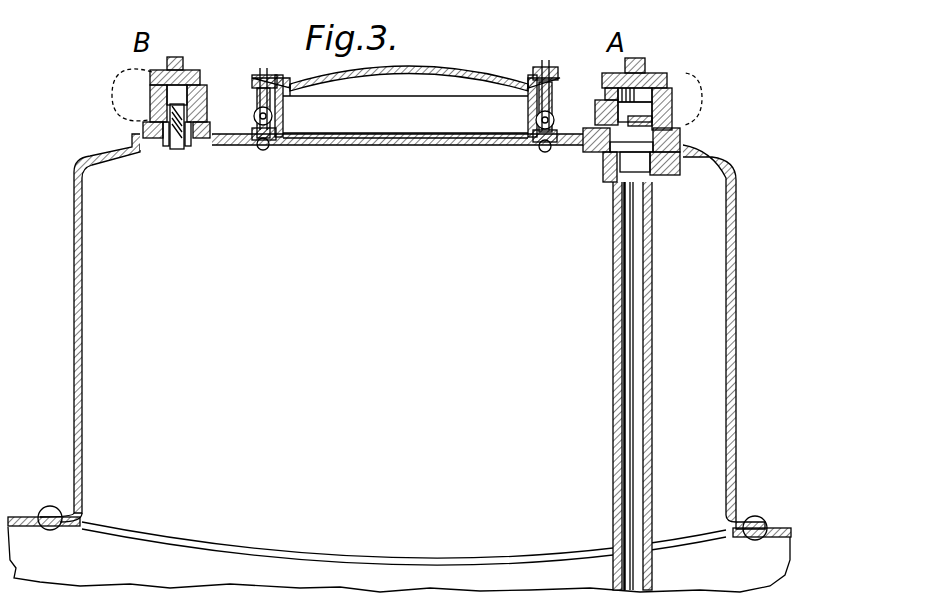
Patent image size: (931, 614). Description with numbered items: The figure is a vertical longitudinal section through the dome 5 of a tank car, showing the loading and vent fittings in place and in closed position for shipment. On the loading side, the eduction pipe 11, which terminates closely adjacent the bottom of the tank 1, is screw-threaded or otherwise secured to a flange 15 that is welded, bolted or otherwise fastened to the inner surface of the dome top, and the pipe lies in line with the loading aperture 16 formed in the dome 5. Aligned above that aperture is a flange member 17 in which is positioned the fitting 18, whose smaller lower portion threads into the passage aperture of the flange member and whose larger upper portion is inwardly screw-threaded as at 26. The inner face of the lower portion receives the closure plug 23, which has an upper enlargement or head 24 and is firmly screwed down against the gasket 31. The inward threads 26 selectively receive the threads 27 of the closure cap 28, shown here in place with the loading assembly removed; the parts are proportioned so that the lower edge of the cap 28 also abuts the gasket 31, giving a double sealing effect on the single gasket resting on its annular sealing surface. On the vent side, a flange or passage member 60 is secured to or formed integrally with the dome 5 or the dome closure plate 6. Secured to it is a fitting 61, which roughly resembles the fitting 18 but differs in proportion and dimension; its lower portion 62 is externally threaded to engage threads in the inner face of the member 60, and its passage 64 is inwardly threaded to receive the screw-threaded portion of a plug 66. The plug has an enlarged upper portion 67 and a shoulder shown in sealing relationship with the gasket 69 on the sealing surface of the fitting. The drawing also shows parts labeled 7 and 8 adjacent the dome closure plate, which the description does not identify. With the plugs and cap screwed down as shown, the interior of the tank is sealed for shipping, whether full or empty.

The tank 1 is at (778, 527).
The dome 5 is at (738, 283).
The dome closure plate 6 is at (458, 70).
The clamp bolt 7 is at (258, 80).
The nut 8 is at (266, 74).
The eduction pipe 11 is at (652, 357).
The flange 15 is at (600, 150).
The loading aperture 16 is at (636, 170).
The flange member 17 is at (680, 142).
The fitting 18 is at (682, 110).
The closure plug 23 is at (605, 162).
The head 24 is at (648, 84).
The inward screw threads 26 is at (700, 98).
The threads of closure cap 27 is at (666, 96).
The closure cap 28 is at (150, 74).
The gasket 31 is at (660, 120).
The flange or passage member 60 is at (143, 130).
The fitting 61 is at (142, 108).
The lower portion 62 is at (166, 142).
The passage 64 is at (177, 145).
The plug 66 is at (180, 122).
The enlarged upper portion 67 is at (182, 92).
The gasket 69 is at (190, 104).